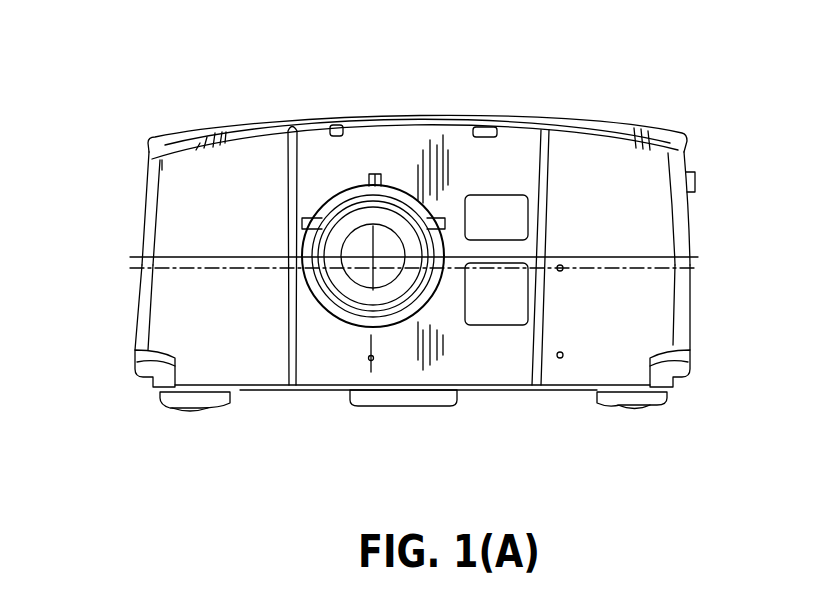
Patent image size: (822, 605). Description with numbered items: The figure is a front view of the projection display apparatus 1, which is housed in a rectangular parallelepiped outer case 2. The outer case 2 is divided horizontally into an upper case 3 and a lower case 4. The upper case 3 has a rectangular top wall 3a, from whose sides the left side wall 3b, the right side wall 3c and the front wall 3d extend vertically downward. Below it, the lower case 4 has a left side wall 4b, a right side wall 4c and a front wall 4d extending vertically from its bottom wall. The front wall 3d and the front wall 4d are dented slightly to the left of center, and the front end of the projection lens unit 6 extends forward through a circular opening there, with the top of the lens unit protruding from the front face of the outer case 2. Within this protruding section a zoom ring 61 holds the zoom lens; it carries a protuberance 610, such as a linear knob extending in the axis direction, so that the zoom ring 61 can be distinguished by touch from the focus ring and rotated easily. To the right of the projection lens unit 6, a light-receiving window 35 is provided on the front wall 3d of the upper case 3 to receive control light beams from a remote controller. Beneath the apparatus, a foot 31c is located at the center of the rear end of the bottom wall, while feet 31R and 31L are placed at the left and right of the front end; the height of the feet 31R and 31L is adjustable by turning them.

The projection display apparatus 1 is at (172, 62).
The outer case 2 is at (263, 121).
The upper case 3 is at (173, 190).
The top wall 3a is at (530, 113).
The left side wall 3b is at (130, 267).
The right side wall 3c is at (693, 208).
The front wall 3d is at (235, 224).
The lower case 4 is at (167, 313).
The left side wall 4b is at (133, 348).
The right side wall 4c is at (693, 315).
The front wall 4d is at (233, 334).
The projection lens unit 6 is at (358, 328).
The zoom ring 61 is at (392, 183).
The protuberance 610 is at (370, 184).
The light-receiving window 35 is at (493, 198).
The left foot 31L is at (196, 410).
The foot 31c is at (413, 407).
The right foot 31R is at (633, 406).